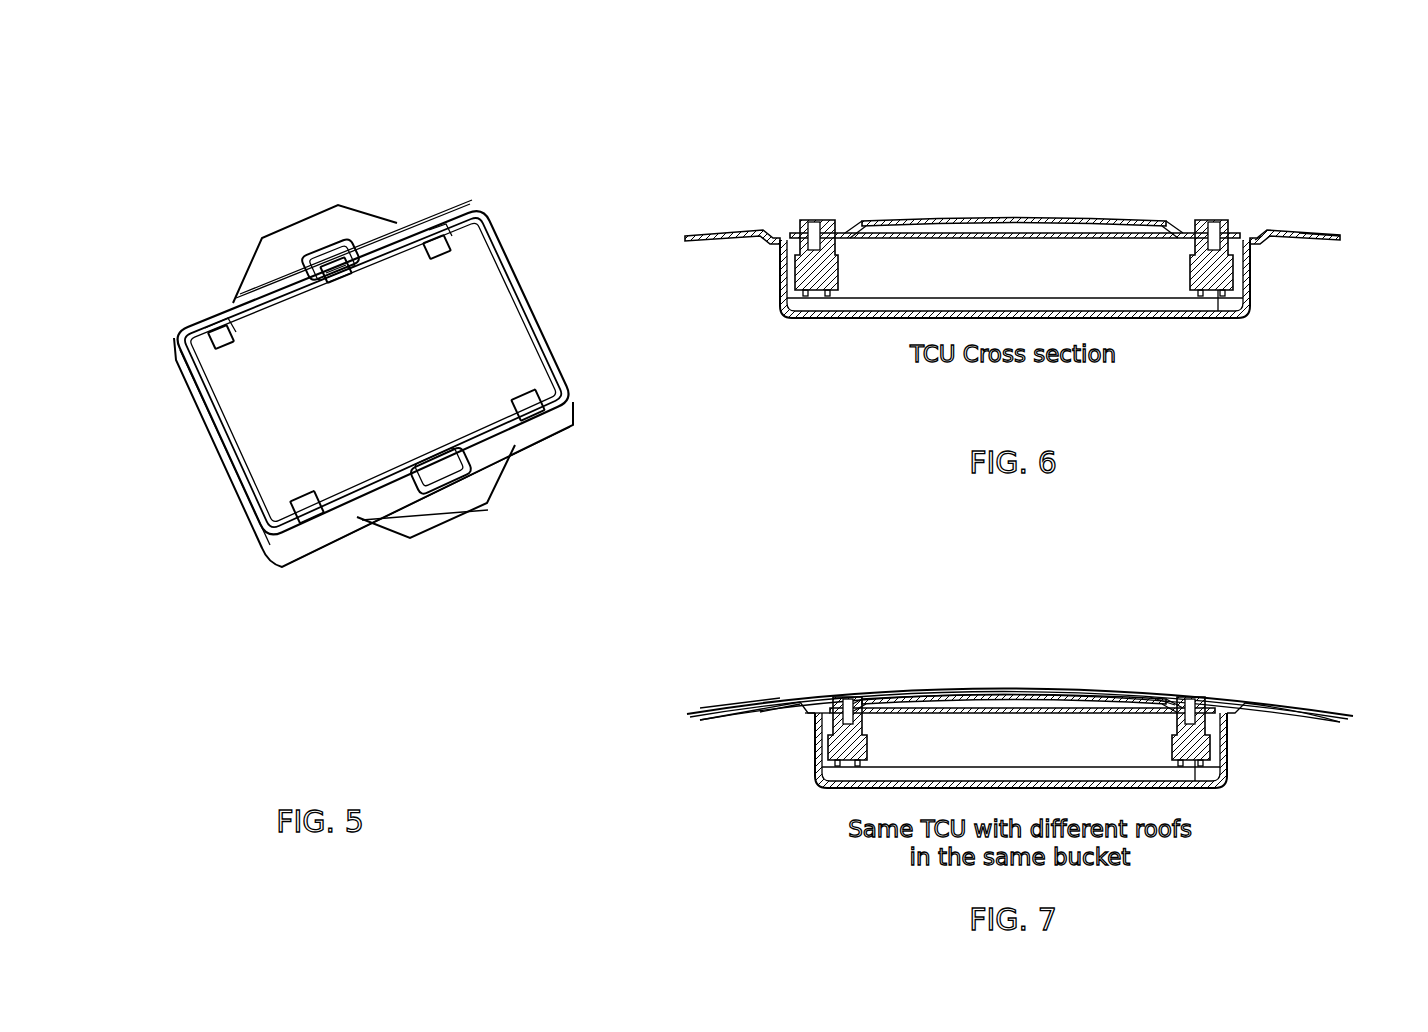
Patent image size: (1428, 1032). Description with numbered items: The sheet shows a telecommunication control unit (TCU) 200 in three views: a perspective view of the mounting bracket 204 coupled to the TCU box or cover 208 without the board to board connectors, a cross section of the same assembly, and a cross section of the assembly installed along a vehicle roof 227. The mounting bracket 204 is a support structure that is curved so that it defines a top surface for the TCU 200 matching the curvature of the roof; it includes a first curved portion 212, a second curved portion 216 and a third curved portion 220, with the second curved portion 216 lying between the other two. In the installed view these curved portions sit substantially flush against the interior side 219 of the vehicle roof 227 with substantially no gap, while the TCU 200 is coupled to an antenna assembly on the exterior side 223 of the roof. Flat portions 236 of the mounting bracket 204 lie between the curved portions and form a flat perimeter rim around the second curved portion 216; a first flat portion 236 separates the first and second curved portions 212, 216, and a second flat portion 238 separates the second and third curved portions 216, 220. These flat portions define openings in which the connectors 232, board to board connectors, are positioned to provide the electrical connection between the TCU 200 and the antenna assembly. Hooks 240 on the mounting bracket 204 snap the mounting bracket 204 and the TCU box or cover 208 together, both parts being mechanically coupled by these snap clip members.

In FIG. 5, the telecommunication control unit (TCU) 200 is at (176, 152).
In FIG. 6, the telecommunication control unit (TCU) 200 is at (1322, 48).
In FIG. 7, the telecommunication control unit (TCU) 200 is at (1332, 578).
In FIG. 5, the mounting bracket 204 is at (253, 347).
In FIG. 6, the mounting bracket 204 is at (1335, 240).
In FIG. 7, the mounting bracket 204 is at (1300, 716).
In FIG. 5, the TCU box or cover 208 is at (232, 507).
In FIG. 6, the TCU box or cover 208 is at (1195, 318).
In FIG. 7, the TCU box or cover 208 is at (1205, 786).
In FIG. 5, the first curved portion 212 is at (278, 245).
In FIG. 6, the first curved portion 212 is at (872, 165).
In FIG. 7, the first curved portion 212 is at (740, 715).
In FIG. 5, the second curved portion 216 is at (227, 392).
In FIG. 6, the second curved portion 216 is at (1015, 150).
In FIG. 7, the second curved portion 216 is at (930, 695).
In FIG. 5, the third curved portion 220 is at (457, 513).
In FIG. 6, the third curved portion 220 is at (1153, 168).
In FIG. 7, the third curved portion 220 is at (1255, 713).
In FIG. 7, the exterior side of the vehicle roof 223 is at (720, 710).
In FIG. 7, the vehicle roof 227 is at (1320, 708).
In FIG. 7, the interior side of the vehicle roof 219 is at (700, 718).
In FIG. 6, the connectors 232 is at (820, 262).
In FIG. 7, the connectors 232 is at (1200, 748).
In FIG. 5, the flat portions 236 is at (337, 269).
In FIG. 7, the flat portions 236 is at (795, 713).
In FIG. 6, the second flat portion 238 is at (1265, 237).
In FIG. 7, the second flat portion 238 is at (1160, 697).
In FIG. 5, the hooks 240 is at (435, 249).